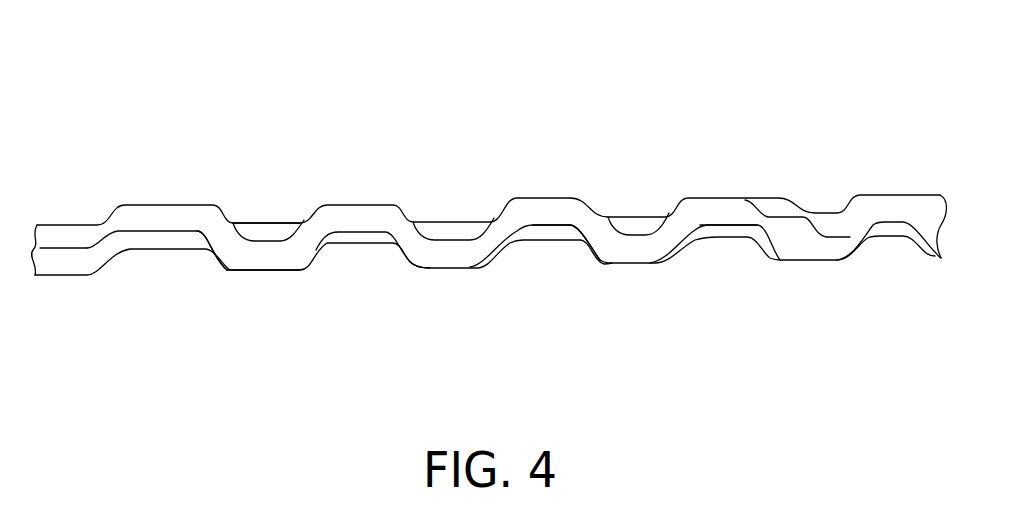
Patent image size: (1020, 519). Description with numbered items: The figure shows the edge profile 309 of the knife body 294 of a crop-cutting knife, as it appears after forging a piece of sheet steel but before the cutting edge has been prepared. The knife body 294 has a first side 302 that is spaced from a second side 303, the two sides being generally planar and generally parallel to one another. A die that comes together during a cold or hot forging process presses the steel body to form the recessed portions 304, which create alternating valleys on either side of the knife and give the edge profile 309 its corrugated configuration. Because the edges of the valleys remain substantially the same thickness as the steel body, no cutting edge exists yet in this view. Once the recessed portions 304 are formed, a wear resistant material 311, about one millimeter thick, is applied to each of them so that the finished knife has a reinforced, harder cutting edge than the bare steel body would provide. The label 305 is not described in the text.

The knife body 294 is at (489, 218).
The first side 302 is at (457, 218).
The second side 303 is at (350, 247).
The recessed portions 304 is at (274, 238).
The strip surface 305 is at (546, 224).
The edge profile 309 is at (228, 298).
The wear resistant material 311 is at (608, 222).